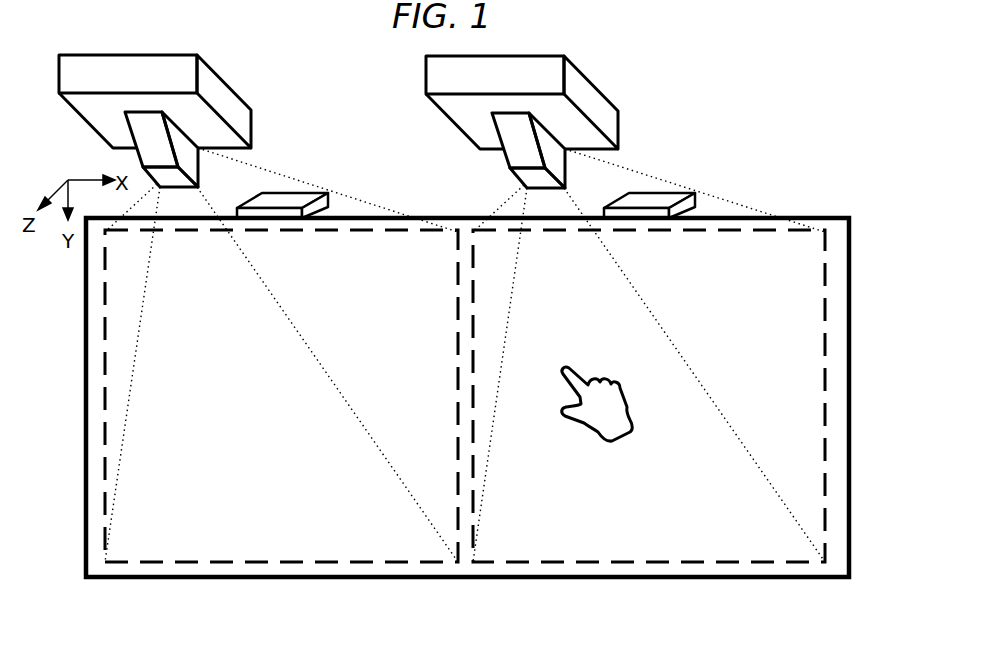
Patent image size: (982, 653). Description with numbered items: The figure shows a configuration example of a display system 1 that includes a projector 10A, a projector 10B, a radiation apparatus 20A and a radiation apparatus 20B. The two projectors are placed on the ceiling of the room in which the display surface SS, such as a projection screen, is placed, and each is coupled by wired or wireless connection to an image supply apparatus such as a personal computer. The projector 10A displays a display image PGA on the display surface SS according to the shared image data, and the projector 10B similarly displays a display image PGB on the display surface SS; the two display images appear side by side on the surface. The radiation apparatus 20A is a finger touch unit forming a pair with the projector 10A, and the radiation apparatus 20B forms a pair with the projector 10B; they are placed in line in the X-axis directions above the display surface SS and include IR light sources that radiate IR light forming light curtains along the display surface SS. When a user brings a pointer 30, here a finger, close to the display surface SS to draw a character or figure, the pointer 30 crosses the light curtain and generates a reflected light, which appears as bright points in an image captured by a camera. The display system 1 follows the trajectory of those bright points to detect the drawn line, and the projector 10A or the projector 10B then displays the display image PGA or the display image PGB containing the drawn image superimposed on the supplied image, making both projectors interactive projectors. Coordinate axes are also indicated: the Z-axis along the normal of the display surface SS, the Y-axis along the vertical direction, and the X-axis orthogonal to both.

The display system 1 is at (468, 354).
The projector 10A is at (619, 126).
The projector 10B is at (251, 121).
The radiation apparatus 20A is at (695, 192).
The radiation apparatus 20B is at (328, 193).
The pointer 30 is at (600, 433).
The display surface SS is at (833, 562).
The display image PGA is at (650, 560).
The display image PGB is at (395, 560).